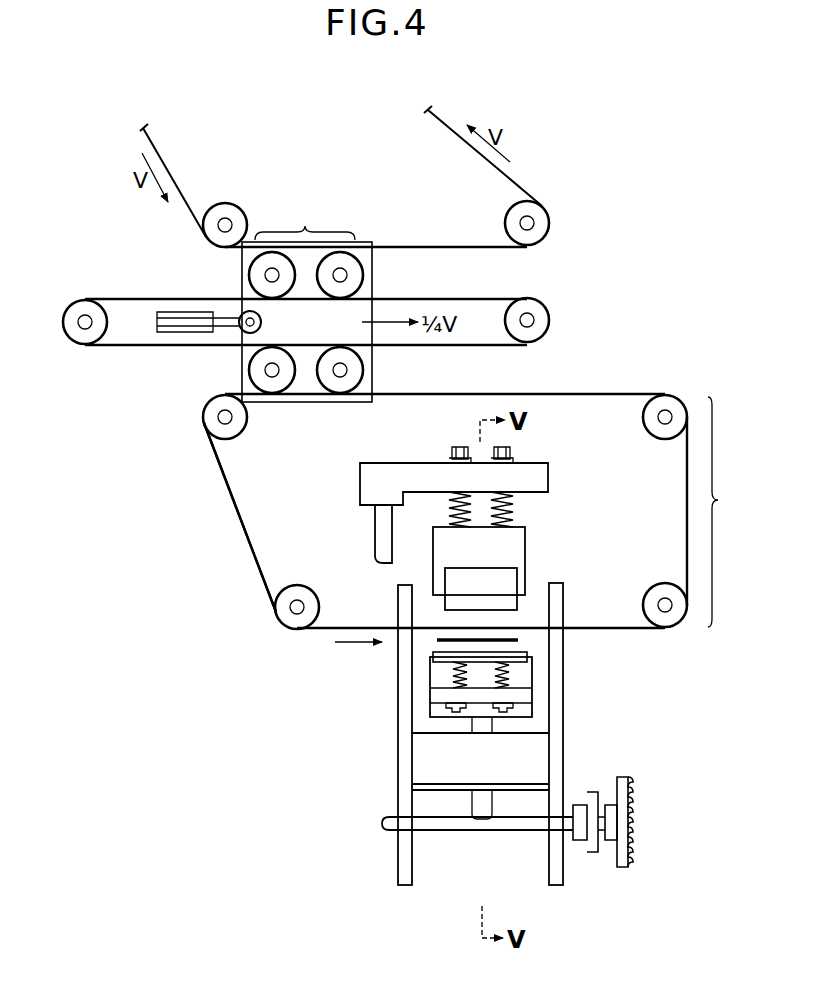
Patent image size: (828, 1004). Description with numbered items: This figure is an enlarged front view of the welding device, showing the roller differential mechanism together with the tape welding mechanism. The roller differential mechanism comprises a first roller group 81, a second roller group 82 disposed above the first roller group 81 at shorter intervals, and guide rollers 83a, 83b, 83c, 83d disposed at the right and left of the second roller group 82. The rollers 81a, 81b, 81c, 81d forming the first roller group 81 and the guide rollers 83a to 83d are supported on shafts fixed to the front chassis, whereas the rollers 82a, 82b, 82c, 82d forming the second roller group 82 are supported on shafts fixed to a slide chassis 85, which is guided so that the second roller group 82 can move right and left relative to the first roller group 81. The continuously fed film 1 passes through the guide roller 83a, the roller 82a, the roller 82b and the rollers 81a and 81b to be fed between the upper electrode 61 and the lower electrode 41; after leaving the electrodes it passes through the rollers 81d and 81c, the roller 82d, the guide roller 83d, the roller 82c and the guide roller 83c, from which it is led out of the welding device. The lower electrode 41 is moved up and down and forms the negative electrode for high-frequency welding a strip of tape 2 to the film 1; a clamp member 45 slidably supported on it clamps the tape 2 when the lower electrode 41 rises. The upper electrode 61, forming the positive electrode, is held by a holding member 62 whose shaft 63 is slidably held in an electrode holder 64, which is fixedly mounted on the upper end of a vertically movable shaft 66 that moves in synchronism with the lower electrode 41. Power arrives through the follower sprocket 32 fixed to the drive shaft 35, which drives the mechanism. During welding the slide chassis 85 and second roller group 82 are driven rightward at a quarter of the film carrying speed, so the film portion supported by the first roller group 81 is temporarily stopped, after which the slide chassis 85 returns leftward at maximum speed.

The film 1 is at (252, 544).
The tape 2 is at (518, 640).
The follower sprocket 32 is at (628, 807).
The drive shaft 35 is at (463, 830).
The lower electrode 41 is at (430, 670).
The clamp member 45 is at (522, 662).
The upper electrode 61 is at (504, 585).
The holding member 62 is at (520, 542).
The shaft 63 is at (515, 500).
The electrode holder 64 is at (548, 476).
The vertically movable shaft 66 is at (375, 540).
The first roller group 81 is at (728, 512).
The roller 81a is at (216, 429).
The roller 81b is at (285, 626).
The roller 81c is at (658, 402).
The roller 81d is at (665, 628).
The second roller group 82 is at (305, 217).
The roller 82a is at (249, 273).
The roller 82b is at (249, 369).
The roller 82c is at (362, 272).
The roller 82d is at (362, 368).
The guide roller 83a is at (212, 234).
The guide roller 83b is at (87, 344).
The guide roller 83c is at (540, 235).
The guide roller 83d is at (538, 334).
The slide chassis 85 is at (372, 243).